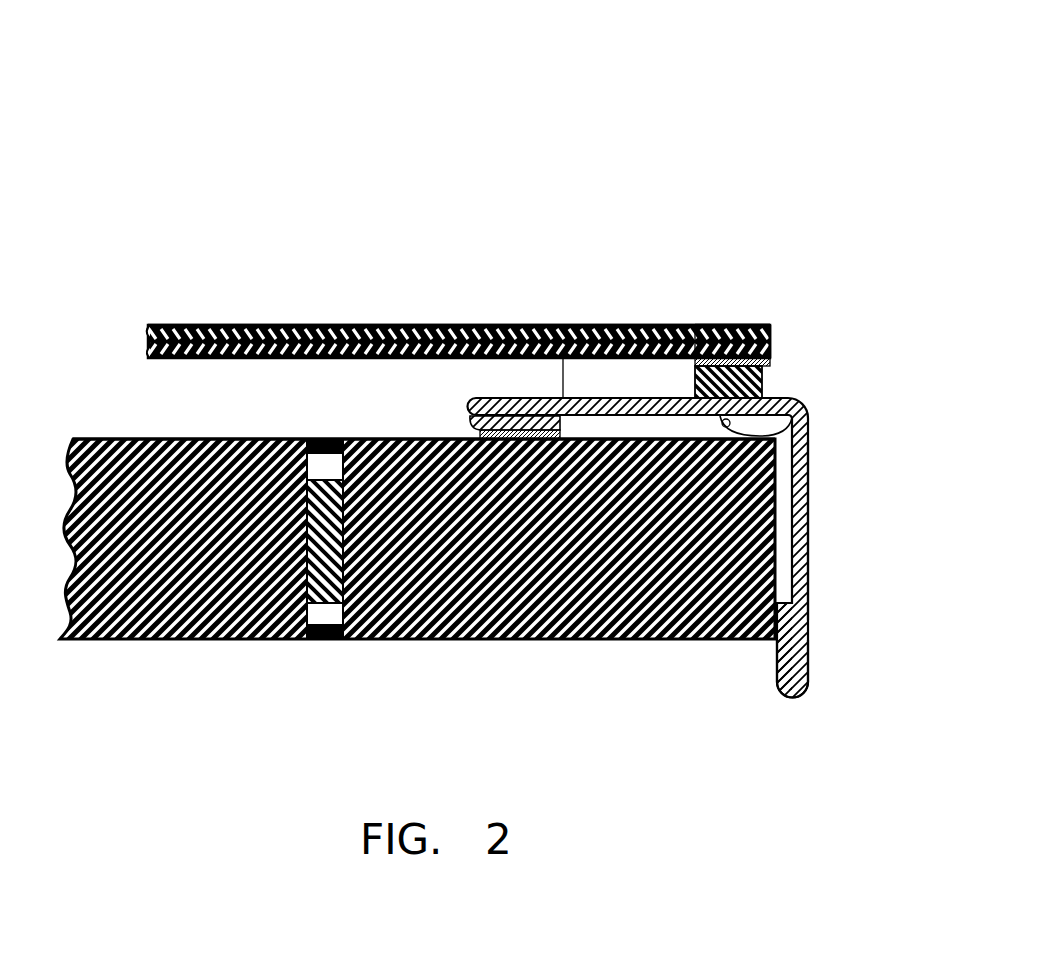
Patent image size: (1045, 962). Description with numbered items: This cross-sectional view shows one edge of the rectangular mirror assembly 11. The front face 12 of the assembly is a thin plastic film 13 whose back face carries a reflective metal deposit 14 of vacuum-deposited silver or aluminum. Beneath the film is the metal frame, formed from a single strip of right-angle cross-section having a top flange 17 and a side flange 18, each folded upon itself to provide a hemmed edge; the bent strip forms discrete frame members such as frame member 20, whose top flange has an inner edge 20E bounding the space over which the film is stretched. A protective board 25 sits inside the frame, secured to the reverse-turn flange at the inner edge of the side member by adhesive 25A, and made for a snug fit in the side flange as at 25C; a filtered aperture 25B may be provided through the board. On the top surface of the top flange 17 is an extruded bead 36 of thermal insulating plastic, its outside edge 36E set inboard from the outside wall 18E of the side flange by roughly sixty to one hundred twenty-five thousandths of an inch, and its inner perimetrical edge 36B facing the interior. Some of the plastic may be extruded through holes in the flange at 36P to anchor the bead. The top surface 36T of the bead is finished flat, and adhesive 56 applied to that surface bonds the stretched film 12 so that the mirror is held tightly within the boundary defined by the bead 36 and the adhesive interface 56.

The mirror assembly 11 is at (516, 164).
The front face 12 is at (281, 285).
The thin plastic film 13 is at (172, 325).
The reflective metal deposit 14 is at (260, 360).
The top flange 17 is at (572, 397).
The side flange 18 is at (810, 478).
The outside wall of the side flange 18E is at (812, 533).
The frame member 20 is at (822, 620).
The inner edge of frame top flange 20E is at (466, 424).
The protective board 25 is at (495, 640).
The adhesive 25A is at (532, 397).
The filtered aperture 25B is at (323, 465).
The snug fit 25C is at (775, 647).
The bead 36 is at (741, 325).
The bead inner perimetrical edge 36B is at (693, 380).
The outside edge of the bead 36E is at (762, 386).
The extruded plastic anchorage 36P is at (808, 415).
The top surface of the bead 36T is at (716, 325).
The adhesive 56 is at (766, 362).